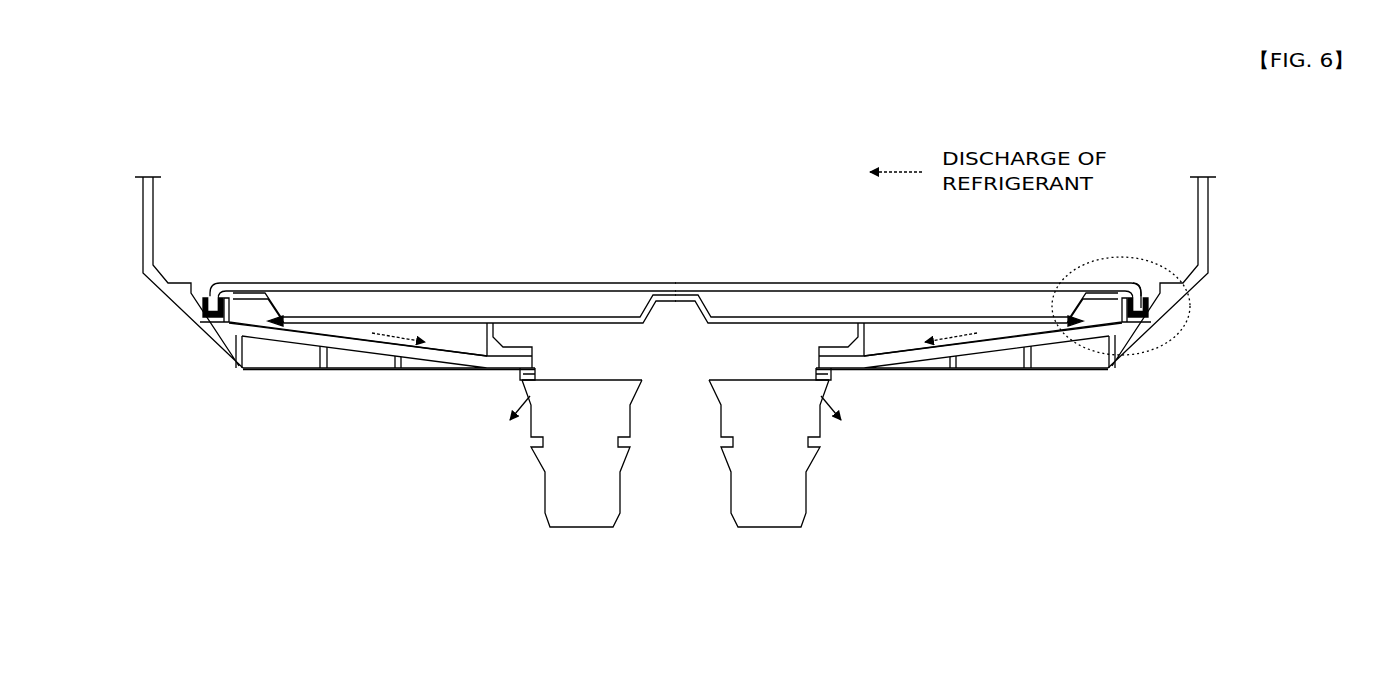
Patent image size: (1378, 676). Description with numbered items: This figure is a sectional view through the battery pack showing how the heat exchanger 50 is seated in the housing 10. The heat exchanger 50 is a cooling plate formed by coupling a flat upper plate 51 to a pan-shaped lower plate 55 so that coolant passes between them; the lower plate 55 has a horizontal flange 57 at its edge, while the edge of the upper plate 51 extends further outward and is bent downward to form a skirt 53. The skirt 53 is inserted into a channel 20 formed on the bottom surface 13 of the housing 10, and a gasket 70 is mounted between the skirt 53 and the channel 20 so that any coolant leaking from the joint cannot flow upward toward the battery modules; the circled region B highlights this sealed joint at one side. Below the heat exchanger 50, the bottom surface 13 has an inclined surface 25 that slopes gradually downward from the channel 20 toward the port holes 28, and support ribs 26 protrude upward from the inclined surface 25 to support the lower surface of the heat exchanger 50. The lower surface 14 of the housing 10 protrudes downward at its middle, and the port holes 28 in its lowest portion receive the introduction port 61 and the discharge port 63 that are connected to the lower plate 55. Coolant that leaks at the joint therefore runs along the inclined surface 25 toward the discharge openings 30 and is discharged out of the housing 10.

The housing 10 is at (1232, 225).
The bottom surface 13 is at (320, 332).
The lower surface 14 is at (430, 368).
The channel 20 is at (226, 318).
The inclined surface 25 is at (360, 335).
The support ribs 26 is at (908, 345).
The port holes 28 is at (522, 388).
The discharge openings 30 is at (520, 366).
The heat exchanger 50 is at (675, 259).
The upper plate 51 is at (433, 284).
The skirt 53 is at (203, 308).
The lower plate 55 is at (599, 315).
The flange 57 is at (1104, 300).
The introduction port 61 is at (556, 512).
The discharge port 63 is at (795, 512).
The gasket 70 is at (1190, 325).
The detail region B is at (1082, 350).